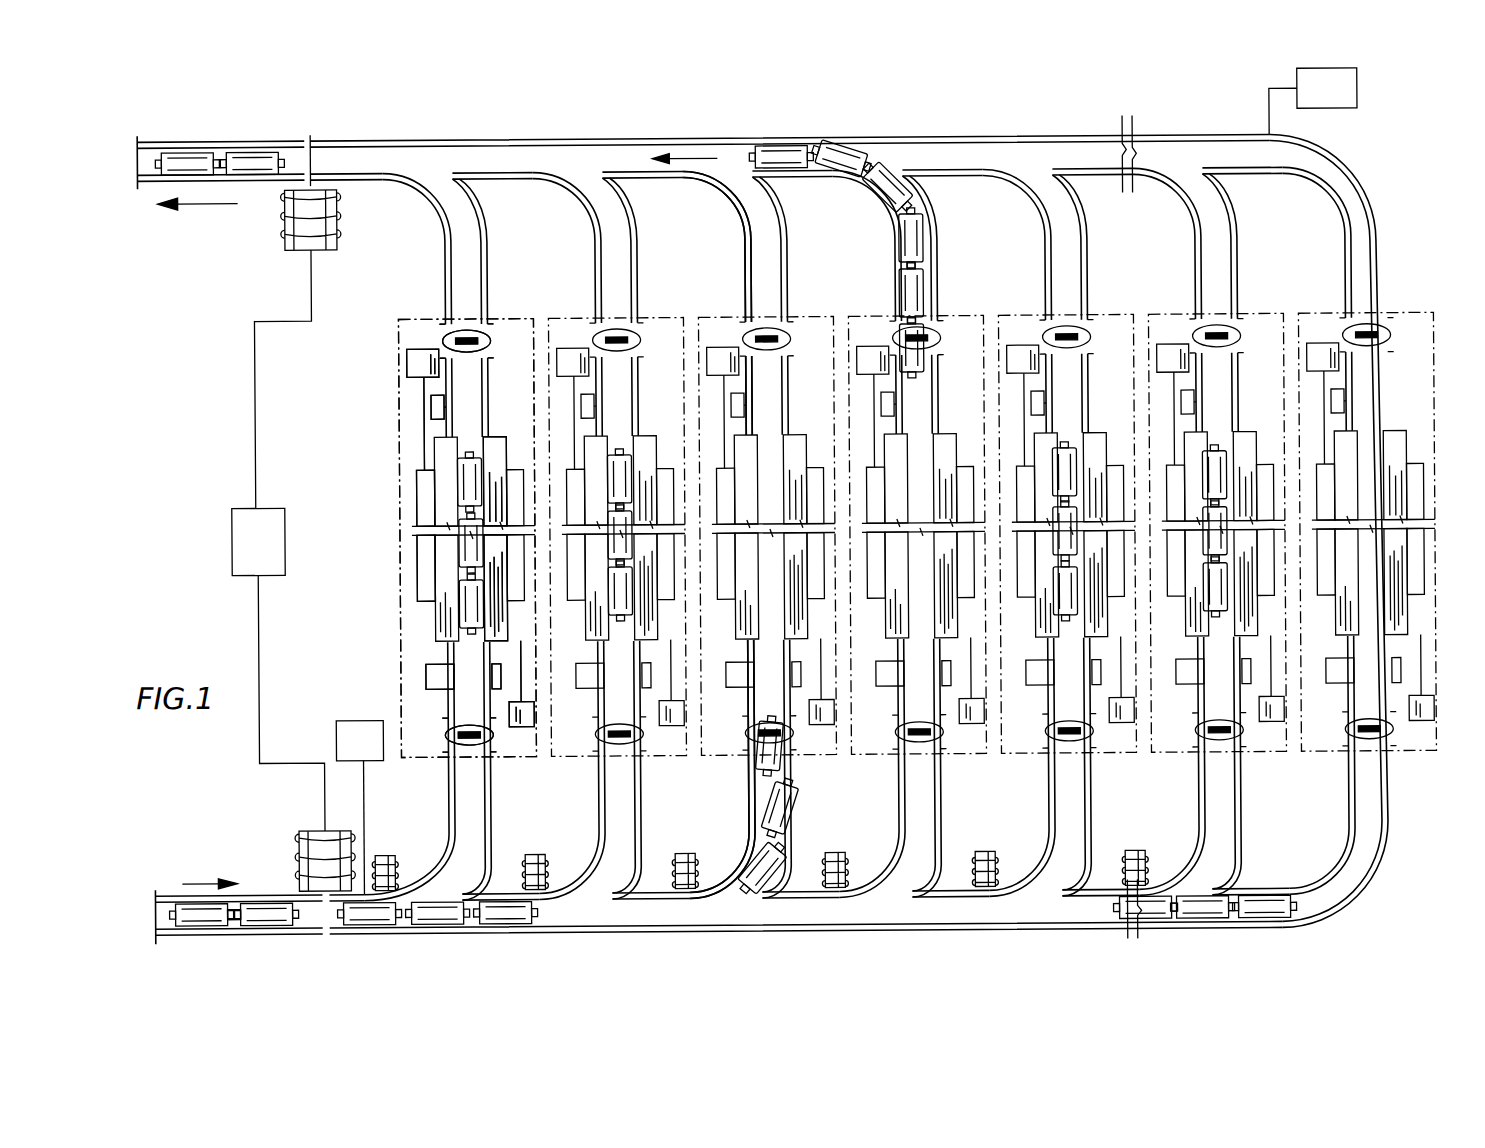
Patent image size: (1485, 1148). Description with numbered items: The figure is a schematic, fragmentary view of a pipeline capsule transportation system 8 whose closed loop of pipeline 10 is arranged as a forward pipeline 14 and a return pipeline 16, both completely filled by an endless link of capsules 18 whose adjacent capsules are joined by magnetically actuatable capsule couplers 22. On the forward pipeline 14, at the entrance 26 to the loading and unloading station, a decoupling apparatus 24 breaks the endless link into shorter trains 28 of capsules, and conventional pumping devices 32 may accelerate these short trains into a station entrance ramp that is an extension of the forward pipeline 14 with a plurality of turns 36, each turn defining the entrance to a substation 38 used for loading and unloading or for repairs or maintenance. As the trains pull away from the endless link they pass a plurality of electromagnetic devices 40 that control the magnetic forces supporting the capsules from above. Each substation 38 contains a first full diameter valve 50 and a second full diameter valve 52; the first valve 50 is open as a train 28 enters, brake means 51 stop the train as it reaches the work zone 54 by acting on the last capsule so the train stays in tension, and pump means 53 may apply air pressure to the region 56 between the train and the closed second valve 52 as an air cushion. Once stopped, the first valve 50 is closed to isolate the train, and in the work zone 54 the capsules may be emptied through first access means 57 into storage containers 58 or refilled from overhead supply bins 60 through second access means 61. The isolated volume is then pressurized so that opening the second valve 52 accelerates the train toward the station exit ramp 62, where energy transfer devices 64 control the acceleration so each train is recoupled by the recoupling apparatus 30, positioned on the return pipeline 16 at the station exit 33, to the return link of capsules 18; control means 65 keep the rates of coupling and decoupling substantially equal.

The pipeline capsule transportation system 8 is at (1150, 126).
The closed loop of pipeline 10 is at (362, 133).
The forward pipeline 14 is at (253, 892).
The return pipeline 16 is at (238, 182).
The endless link of capsules 18 is at (200, 158).
The capsule coupler 22 is at (231, 925).
The decoupling apparatus 24 is at (312, 828).
The entrance 26 is at (338, 932).
The train of capsules 28 is at (848, 158).
The recoupling apparatus 30 is at (326, 246).
The pumping device 32 is at (372, 751).
The exit 33 is at (336, 150).
The turn 36 is at (741, 868).
The substation 38 is at (445, 715).
The electromagnetic device 40 is at (386, 853).
The first full diameter valve 50 is at (500, 742).
The brake means 51 is at (425, 672).
The second full diameter valve 52 is at (497, 336).
The pump means 53 is at (432, 406).
The work zone 54 is at (402, 532).
The region 56 is at (612, 420).
The first access means 57 is at (505, 575).
The storage container 58 is at (668, 727).
The overhead supply bin 60 is at (408, 358).
The second access means 61 is at (417, 480).
The station exit ramp 62 is at (543, 160).
The energy transfer device 64 is at (1344, 105).
The control means 65 is at (272, 552).